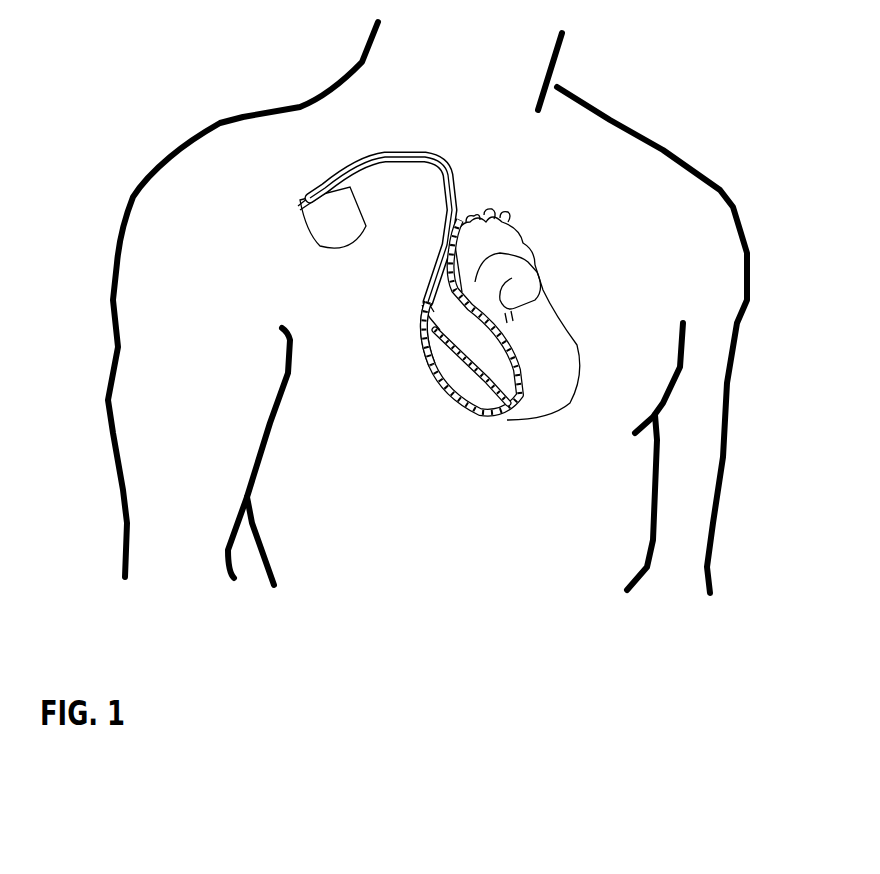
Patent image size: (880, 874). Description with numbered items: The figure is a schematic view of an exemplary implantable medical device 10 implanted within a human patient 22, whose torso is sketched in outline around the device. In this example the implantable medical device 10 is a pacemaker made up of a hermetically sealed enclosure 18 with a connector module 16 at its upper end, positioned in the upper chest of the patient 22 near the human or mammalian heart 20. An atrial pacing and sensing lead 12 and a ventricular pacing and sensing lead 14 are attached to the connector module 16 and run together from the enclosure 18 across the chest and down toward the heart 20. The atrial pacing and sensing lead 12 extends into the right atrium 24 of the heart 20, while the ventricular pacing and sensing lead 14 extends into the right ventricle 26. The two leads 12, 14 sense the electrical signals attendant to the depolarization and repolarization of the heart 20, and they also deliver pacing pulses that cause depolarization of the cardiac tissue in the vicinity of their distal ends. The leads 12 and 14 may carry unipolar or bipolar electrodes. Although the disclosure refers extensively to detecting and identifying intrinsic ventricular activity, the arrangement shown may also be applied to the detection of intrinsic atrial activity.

The implantable medical device 10 is at (316, 273).
The atrial pacing and sensing lead 12 is at (420, 308).
The ventricular pacing and sensing lead 14 is at (483, 380).
The connector module 16 is at (305, 197).
The hermetically sealed enclosure 18 is at (312, 238).
The heart 20 is at (570, 347).
The patient 22 is at (738, 262).
The right atrium 24 is at (412, 329).
The right ventricle 26 is at (436, 386).